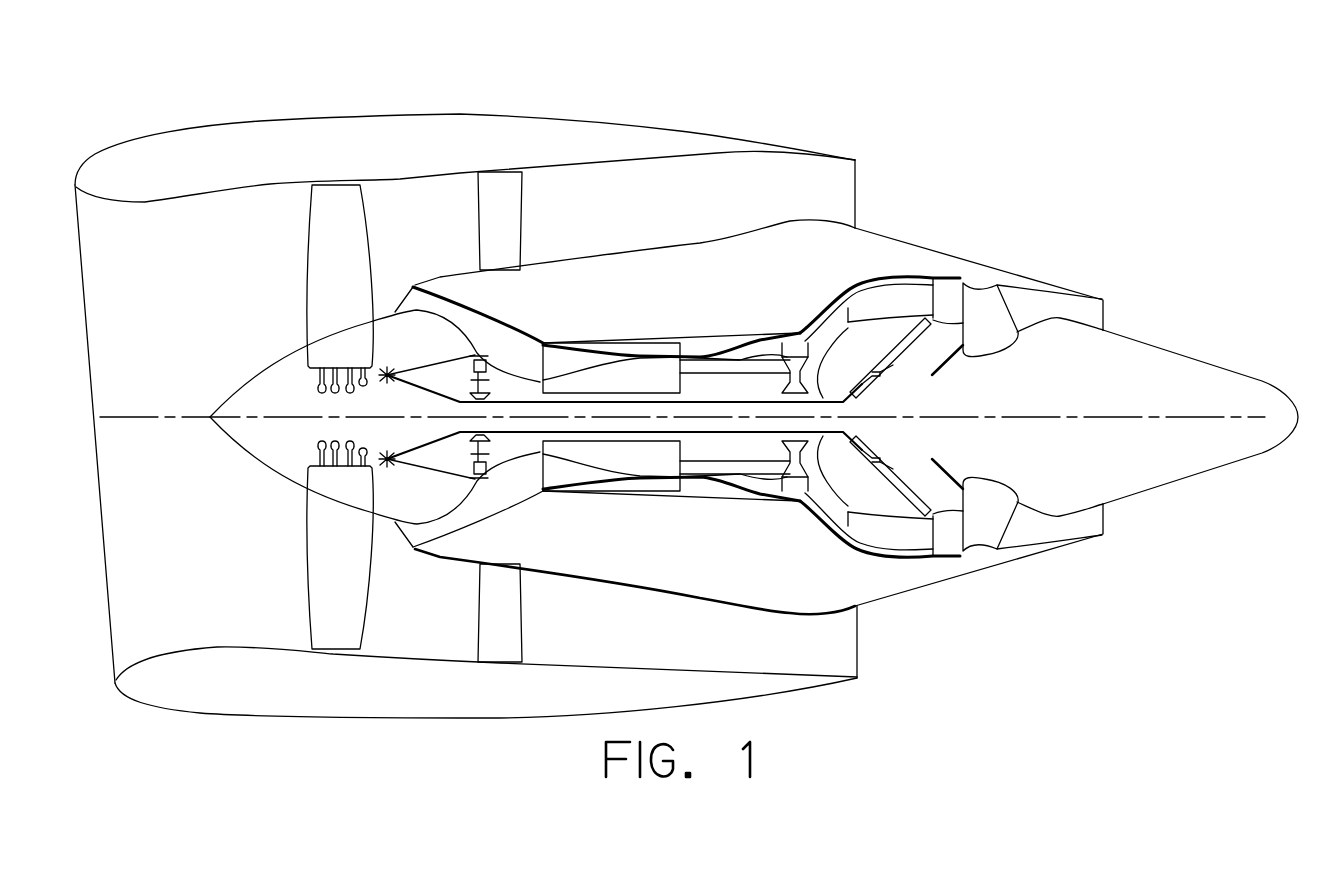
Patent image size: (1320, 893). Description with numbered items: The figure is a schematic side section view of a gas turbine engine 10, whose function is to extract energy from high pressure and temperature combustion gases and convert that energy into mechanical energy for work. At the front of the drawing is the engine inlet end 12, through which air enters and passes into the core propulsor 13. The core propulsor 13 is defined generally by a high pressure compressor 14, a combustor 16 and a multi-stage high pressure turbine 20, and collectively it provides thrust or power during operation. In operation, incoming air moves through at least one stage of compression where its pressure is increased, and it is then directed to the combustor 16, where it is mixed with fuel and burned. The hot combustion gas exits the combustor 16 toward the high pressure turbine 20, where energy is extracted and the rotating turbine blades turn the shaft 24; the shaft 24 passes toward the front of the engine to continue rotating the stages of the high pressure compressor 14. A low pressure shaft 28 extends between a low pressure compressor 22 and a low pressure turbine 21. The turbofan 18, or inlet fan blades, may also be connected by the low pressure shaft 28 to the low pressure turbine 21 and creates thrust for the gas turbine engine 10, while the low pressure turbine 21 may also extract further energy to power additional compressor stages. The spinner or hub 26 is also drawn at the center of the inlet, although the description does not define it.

The gas turbine engine 10 is at (748, 85).
The engine inlet end 12 is at (64, 230).
The core propulsor 13 is at (683, 283).
The high pressure compressor 14 is at (566, 358).
The combustor 16 is at (752, 355).
The turbofan 18 is at (333, 258).
The multi-stage high pressure turbine 20 is at (795, 330).
The low pressure turbine 21 is at (890, 295).
The low pressure compressor 22 is at (431, 300).
The shaft 24 is at (757, 478).
The spinner / hub 26 is at (140, 395).
The low pressure shaft 28 is at (822, 346).